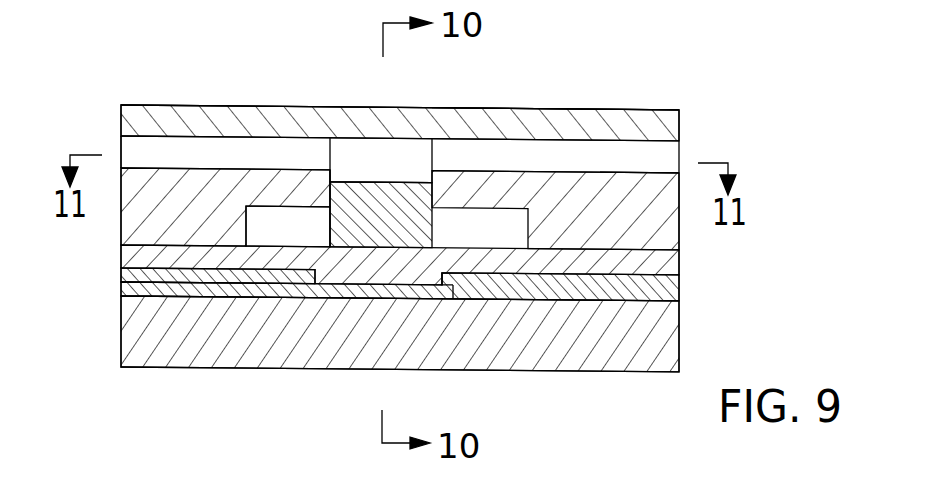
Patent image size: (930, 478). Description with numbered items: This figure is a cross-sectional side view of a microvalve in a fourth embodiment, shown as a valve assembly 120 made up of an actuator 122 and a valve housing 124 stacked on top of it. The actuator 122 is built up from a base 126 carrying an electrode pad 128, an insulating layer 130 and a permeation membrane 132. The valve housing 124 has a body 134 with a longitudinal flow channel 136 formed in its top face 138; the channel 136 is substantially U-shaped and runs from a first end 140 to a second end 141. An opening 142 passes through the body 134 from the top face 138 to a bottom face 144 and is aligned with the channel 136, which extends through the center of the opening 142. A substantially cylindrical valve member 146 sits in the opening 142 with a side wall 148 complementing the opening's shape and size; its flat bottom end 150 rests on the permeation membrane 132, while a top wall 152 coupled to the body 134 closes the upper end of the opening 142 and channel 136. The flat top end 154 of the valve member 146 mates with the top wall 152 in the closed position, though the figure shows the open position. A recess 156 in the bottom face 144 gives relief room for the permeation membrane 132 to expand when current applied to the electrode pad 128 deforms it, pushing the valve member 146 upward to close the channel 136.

The valve assembly 120 is at (716, 98).
The actuator 122 is at (704, 301).
The valve housing 124 is at (665, 97).
The base 126 is at (668, 348).
The electrode pad 128 is at (273, 284).
The insulating layer 130 is at (681, 291).
The permeation membrane 132 is at (681, 263).
The body 134 is at (147, 225).
The longitudinal flow channel 136 is at (664, 163).
The top face 138 is at (118, 136).
The first end 140 is at (118, 150).
The second end 141 is at (683, 147).
The opening 142 is at (421, 148).
The bottom face 144 is at (133, 252).
The valve member 146 is at (362, 168).
The side wall 148 is at (327, 225).
The bottom end 150 is at (417, 247).
The top wall 152 is at (537, 108).
The top end 154 is at (390, 180).
The recess 156 is at (314, 215).